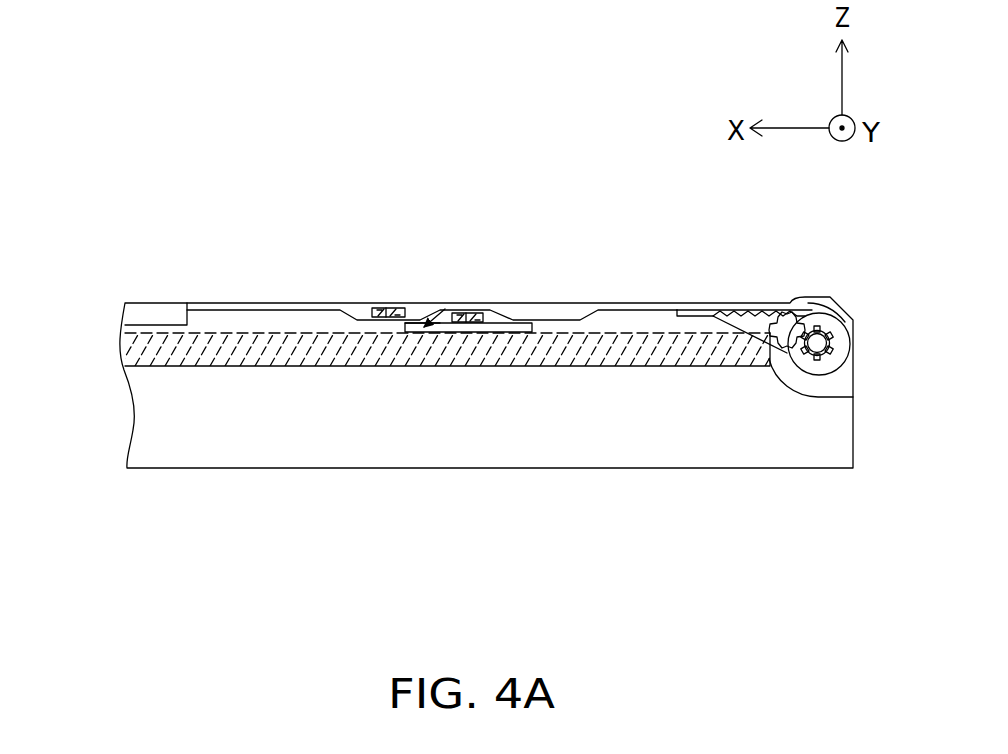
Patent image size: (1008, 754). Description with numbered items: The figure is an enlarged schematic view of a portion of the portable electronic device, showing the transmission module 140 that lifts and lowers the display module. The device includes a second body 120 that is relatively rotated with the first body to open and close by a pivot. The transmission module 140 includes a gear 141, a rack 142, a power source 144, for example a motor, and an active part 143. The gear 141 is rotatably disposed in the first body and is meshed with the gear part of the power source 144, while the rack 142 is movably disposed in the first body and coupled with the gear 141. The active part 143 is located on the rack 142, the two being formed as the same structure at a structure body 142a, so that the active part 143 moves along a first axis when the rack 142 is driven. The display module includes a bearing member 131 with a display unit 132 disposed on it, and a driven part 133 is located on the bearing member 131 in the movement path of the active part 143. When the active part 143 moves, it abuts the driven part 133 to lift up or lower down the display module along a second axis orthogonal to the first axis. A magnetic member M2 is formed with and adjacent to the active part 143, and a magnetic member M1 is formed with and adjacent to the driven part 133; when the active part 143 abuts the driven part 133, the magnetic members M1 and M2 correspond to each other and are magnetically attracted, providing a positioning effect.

The second body 120 is at (140, 442).
The bearing member 131 is at (157, 305).
The display unit 132 is at (122, 352).
The driven part 133 is at (437, 322).
The transmission module 140 is at (118, 9).
The gear 141 is at (787, 312).
The rack 142 is at (711, 311).
The structure body 142a is at (280, 304).
The active part 143 is at (430, 314).
The power source 144 is at (817, 343).
The magnetic member M1 is at (470, 308).
The magnetic member M2 is at (385, 306).